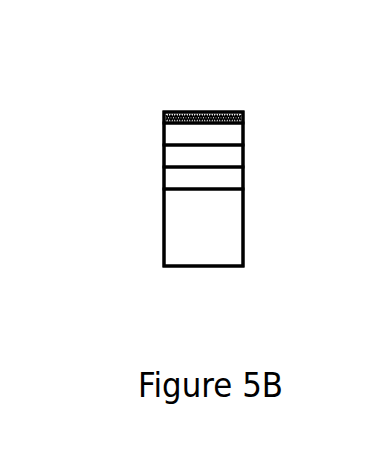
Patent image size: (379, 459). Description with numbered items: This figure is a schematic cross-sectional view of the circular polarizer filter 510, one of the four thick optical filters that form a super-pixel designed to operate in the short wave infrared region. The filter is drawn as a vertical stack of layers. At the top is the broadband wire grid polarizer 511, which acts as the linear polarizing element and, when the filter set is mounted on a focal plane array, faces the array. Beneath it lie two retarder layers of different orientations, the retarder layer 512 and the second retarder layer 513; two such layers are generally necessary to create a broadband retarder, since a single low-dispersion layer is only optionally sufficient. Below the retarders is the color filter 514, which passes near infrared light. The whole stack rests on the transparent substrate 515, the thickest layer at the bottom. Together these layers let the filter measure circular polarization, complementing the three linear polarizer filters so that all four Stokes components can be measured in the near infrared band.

The circular polarizer filter 510 is at (207, 75).
The broadband wire grid polarizer 511 is at (243, 117).
The retarder layer 512 is at (164, 133).
The second retarder layer 513 is at (243, 157).
The color filter 514 is at (164, 180).
The transparent substrate 515 is at (164, 250).